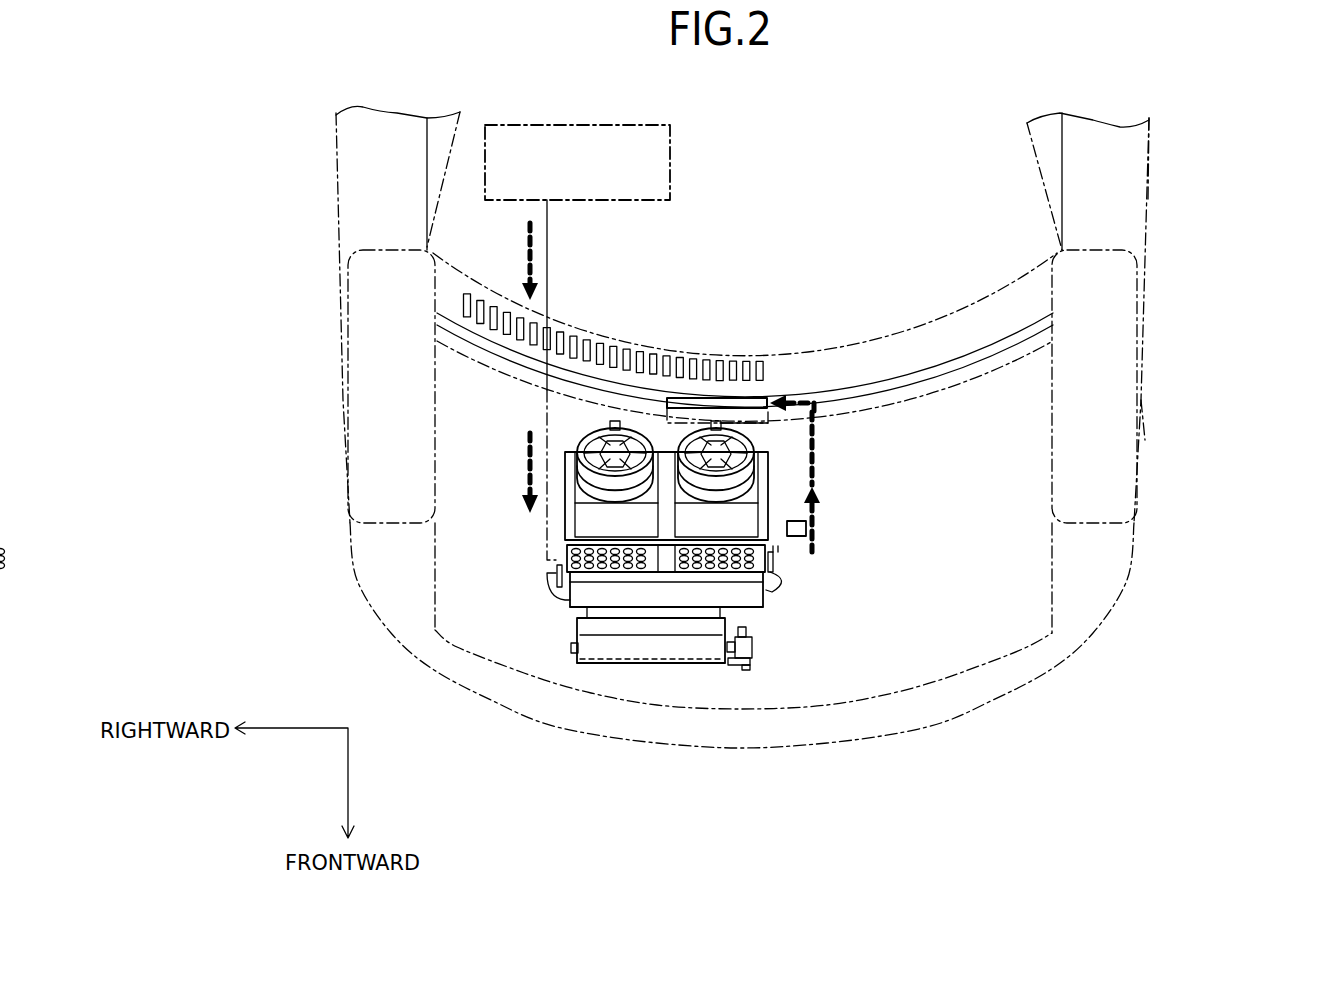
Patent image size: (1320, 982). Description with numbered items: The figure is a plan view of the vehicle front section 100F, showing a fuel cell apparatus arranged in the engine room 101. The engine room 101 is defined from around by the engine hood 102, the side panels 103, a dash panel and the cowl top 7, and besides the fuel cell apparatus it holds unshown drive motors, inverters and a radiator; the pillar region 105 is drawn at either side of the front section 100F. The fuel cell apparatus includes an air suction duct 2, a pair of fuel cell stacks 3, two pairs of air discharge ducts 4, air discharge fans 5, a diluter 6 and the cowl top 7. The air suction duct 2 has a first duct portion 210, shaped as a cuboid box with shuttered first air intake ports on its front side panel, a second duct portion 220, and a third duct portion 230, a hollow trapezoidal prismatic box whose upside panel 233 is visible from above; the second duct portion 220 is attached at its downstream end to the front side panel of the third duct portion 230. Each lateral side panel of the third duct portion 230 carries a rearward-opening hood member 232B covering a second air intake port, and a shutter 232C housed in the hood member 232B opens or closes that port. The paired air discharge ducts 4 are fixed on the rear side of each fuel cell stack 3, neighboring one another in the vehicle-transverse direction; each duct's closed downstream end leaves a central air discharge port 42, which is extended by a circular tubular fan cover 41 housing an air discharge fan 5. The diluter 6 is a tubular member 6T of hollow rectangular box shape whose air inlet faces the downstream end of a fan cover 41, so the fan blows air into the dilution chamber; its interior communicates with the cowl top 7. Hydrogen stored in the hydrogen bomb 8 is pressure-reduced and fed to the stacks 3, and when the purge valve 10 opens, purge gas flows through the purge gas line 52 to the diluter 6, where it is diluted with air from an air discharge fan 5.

The air suction duct 2 is at (578, 680).
The fuel cell stack 3 is at (779, 553).
The air discharge duct 4 is at (592, 516).
The air discharge fan 5 is at (672, 434).
The diluter 6 is at (700, 397).
The tubular member 6T is at (680, 408).
The cowl top 7 is at (900, 383).
The hydrogen bomb 8 is at (670, 148).
The purge valve 10 is at (807, 528).
The fan cover 41 is at (760, 490).
The air discharge port 42 is at (577, 450).
The purge gas line 52 is at (797, 450).
The vehicle front section 100F is at (1160, 280).
The engine room 101 is at (967, 582).
The engine hood 102 is at (1053, 573).
The side panel 103 is at (1100, 553).
The front pillar 105 is at (1000, 227).
The first duct portion 210 is at (672, 675).
The second duct portion 220 is at (575, 623).
The third duct portion 230 is at (556, 605).
The hood member 232B is at (783, 563).
The shutter 232C is at (547, 562).
The upside panel 233 is at (733, 592).